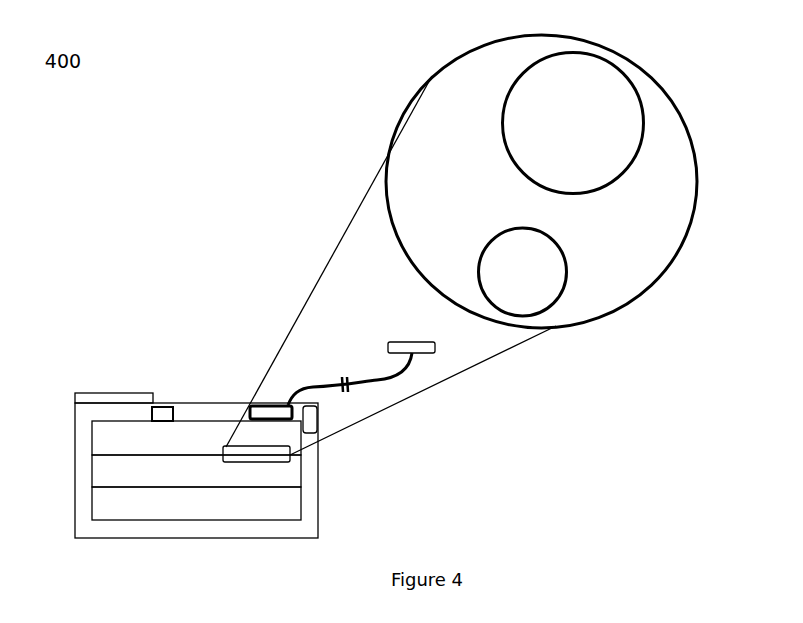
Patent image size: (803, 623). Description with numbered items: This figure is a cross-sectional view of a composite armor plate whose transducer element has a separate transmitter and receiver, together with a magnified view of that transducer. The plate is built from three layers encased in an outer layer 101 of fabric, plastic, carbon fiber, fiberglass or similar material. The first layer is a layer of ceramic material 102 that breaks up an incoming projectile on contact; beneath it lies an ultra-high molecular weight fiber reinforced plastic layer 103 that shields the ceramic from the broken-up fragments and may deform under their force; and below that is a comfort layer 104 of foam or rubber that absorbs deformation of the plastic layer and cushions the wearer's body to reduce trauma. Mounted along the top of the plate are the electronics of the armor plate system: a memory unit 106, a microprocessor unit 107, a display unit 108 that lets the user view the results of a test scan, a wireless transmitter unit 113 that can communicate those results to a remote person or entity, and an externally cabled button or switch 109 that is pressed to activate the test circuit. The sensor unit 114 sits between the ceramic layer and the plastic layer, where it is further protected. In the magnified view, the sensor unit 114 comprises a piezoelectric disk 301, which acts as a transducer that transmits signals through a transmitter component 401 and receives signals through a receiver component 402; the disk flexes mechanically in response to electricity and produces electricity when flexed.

The outer layer 101 is at (75, 472).
The layer of ceramic material 102 is at (196, 438).
The ultra-high molecular weight fiber reinforced plastic layer 103 is at (196, 471).
The comfort layer 104 is at (196, 503).
The memory unit 106 is at (161, 407).
The microprocessor unit 107 is at (272, 406).
The display unit 108 is at (113, 393).
The button or switch 109 is at (361, 364).
The wireless transmitter unit 113 is at (309, 414).
The sensor unit 114 is at (270, 455).
The piezoelectric disk 301 is at (617, 220).
The transmitter component 401 is at (565, 118).
The receiver component 402 is at (530, 276).